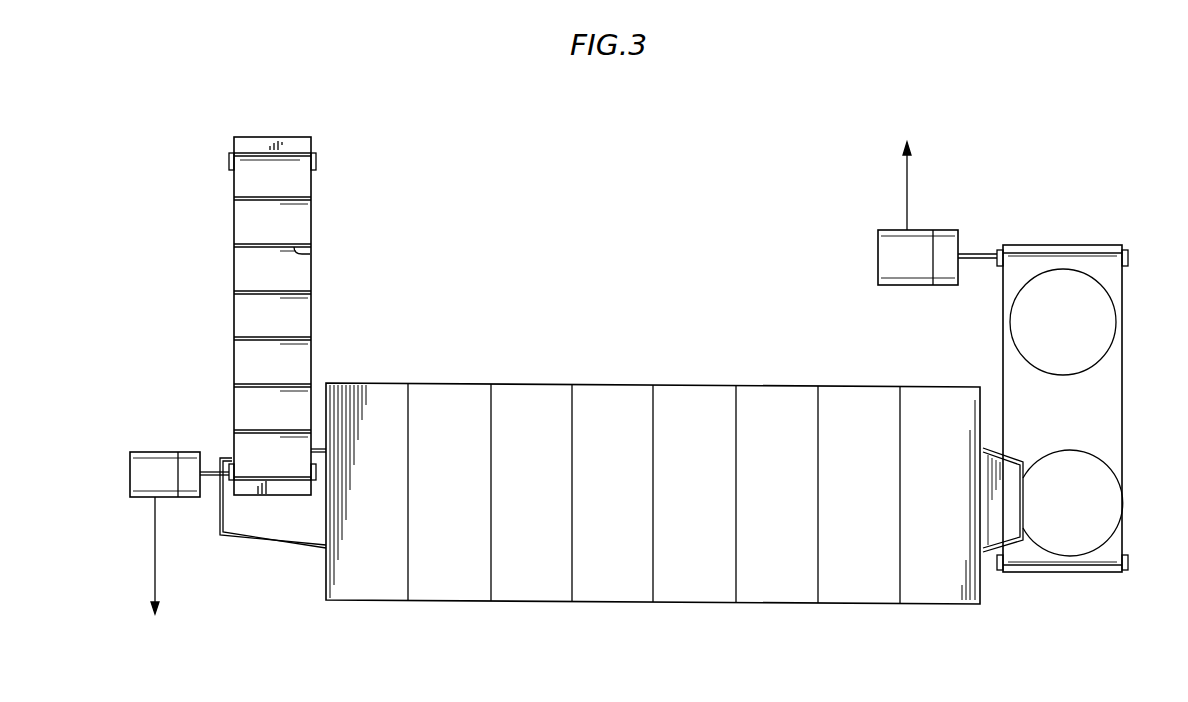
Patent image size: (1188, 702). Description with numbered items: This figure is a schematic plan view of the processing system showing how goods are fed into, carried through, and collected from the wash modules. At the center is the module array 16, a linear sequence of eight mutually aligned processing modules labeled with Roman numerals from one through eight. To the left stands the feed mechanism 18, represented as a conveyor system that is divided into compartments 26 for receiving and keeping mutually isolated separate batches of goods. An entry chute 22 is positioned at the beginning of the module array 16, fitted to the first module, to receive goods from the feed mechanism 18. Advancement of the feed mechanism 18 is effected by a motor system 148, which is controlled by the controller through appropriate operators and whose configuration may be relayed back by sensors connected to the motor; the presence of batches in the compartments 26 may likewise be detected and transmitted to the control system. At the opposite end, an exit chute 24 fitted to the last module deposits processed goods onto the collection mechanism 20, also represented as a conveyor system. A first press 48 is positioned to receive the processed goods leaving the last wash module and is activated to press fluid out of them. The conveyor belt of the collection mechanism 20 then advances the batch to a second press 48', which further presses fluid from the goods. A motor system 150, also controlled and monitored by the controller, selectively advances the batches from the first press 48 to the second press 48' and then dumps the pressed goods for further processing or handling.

The module array 16 is at (462, 383).
The feed mechanism 18 is at (312, 313).
The collection mechanism 20 is at (1122, 405).
The entry chute 22 is at (273, 530).
The exit chute 24 is at (1008, 525).
The compartments 26 is at (302, 253).
The press 48 is at (1103, 503).
The second press 48' is at (1098, 322).
The motor system 148 is at (158, 451).
The motor system 150 is at (931, 201).